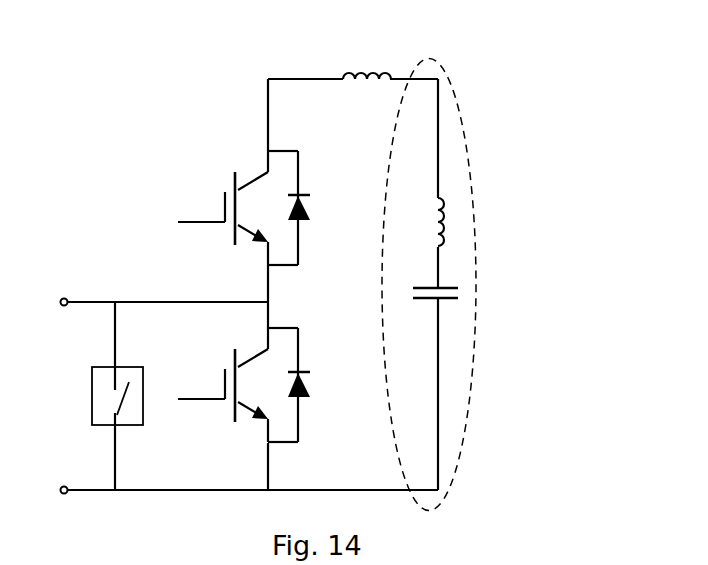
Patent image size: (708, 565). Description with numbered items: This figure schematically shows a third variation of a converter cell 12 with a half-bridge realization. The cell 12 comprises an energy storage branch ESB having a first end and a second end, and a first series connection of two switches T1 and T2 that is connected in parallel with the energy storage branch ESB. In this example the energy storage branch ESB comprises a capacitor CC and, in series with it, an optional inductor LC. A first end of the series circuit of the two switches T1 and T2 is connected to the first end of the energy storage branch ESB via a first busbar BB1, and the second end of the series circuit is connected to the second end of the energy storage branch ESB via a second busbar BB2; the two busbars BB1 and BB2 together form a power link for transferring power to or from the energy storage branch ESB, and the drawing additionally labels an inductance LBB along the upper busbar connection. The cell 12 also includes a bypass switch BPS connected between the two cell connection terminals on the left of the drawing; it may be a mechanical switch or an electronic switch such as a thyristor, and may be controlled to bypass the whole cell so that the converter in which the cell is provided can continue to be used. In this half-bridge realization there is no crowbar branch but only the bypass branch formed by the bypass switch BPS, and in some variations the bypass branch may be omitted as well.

The cell 12 is at (604, 78).
The first busbar BB1 is at (304, 61).
The second busbar BB2 is at (353, 508).
The busbar inductance LBB is at (367, 58).
The energy storage branch ESB is at (453, 285).
The inductor LC is at (416, 222).
The capacitor CC is at (420, 296).
The bypass switch BPS is at (76, 396).
The first switch T1 is at (231, 208).
The second switch T2 is at (238, 385).